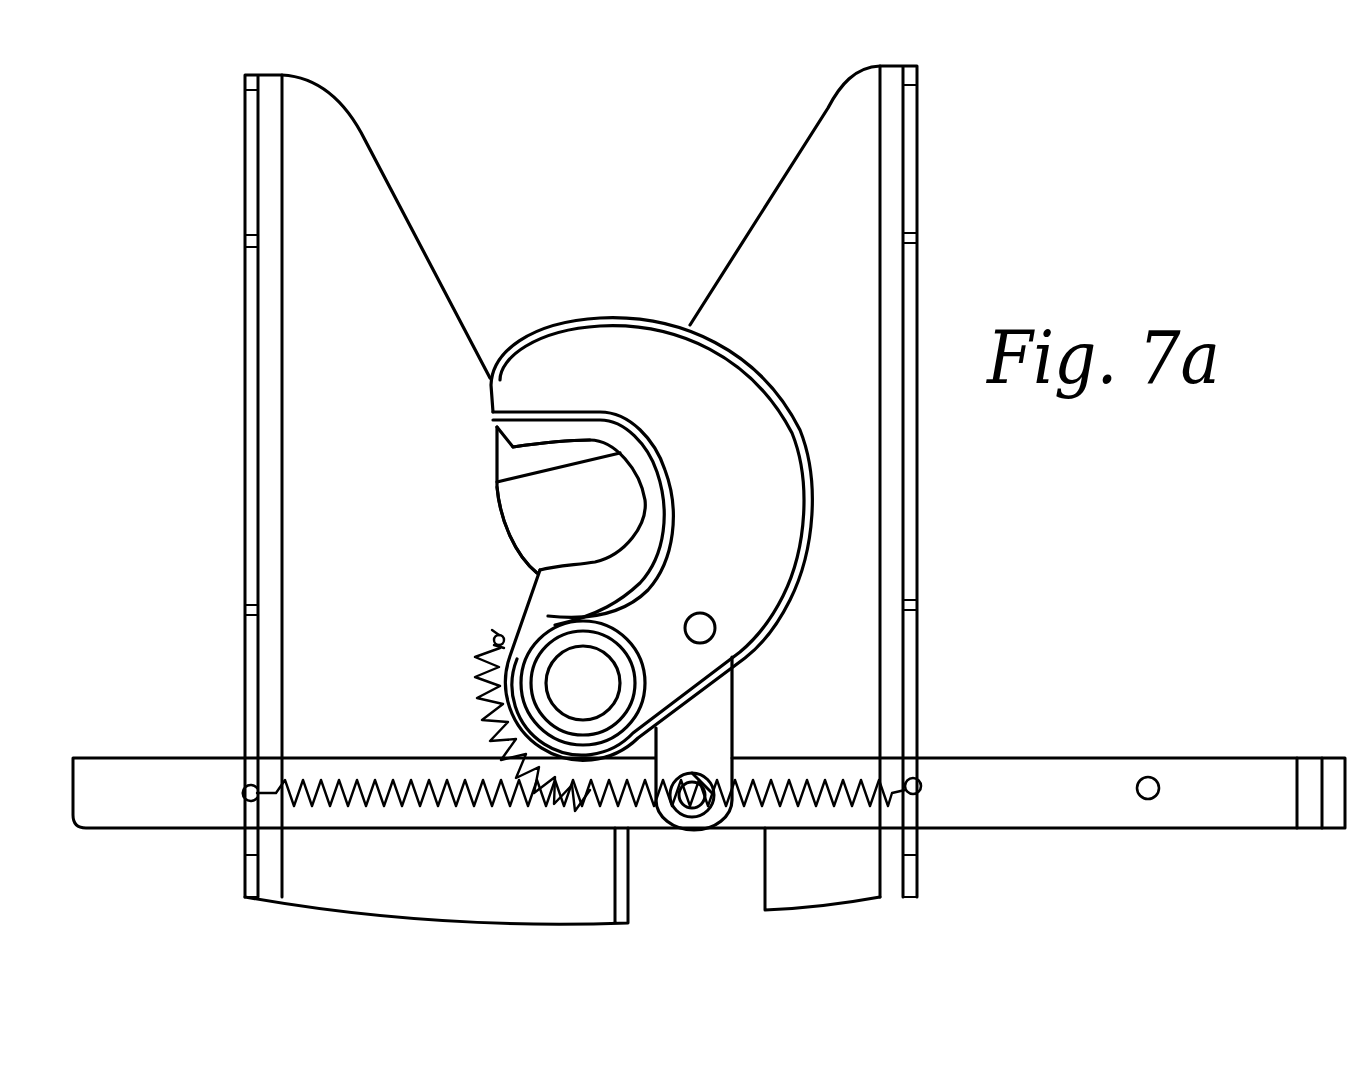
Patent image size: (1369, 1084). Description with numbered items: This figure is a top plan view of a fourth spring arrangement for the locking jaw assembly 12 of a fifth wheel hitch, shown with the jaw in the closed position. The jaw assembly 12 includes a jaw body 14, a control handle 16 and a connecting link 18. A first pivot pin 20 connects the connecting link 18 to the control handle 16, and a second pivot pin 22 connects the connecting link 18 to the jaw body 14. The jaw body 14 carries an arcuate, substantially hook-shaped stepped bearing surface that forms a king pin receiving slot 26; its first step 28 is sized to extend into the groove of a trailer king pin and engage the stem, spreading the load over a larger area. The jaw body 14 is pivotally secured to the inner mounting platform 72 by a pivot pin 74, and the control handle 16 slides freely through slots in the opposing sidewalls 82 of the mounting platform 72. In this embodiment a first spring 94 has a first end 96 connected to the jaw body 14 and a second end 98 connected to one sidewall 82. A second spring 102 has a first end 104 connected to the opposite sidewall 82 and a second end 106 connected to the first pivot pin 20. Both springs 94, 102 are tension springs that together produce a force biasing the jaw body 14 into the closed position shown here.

The locking jaw assembly 12 is at (627, 274).
The jaw body 14 is at (717, 507).
The control handle 16 is at (1048, 800).
The connecting link 18 is at (683, 742).
The first pivot pin 20 is at (708, 818).
The second pivot pin 22 is at (706, 626).
The king pin receiving slot 26 is at (555, 512).
The first step 28 is at (497, 482).
The mounting platform 72 is at (793, 277).
The pivot pin 74 is at (568, 699).
The sidewall 82 is at (245, 413).
The first spring 94 is at (492, 740).
The first end 96 is at (502, 633).
The second end 98 is at (921, 786).
The second spring 102 is at (462, 806).
The first end 104 is at (247, 790).
The second end 106 is at (705, 800).